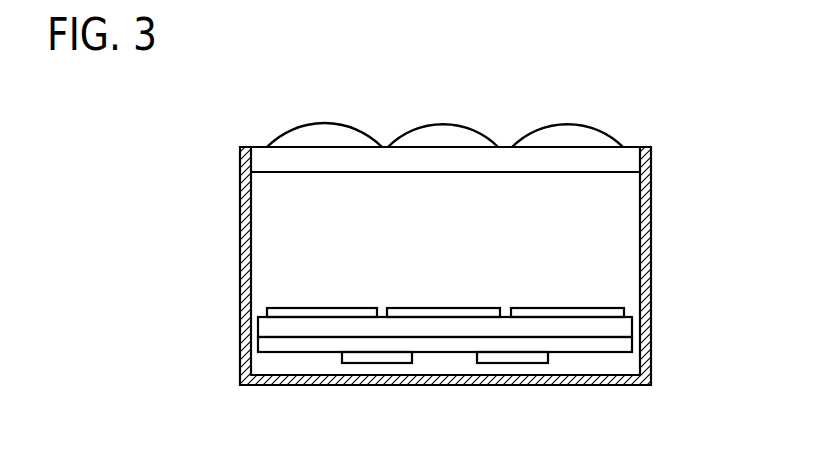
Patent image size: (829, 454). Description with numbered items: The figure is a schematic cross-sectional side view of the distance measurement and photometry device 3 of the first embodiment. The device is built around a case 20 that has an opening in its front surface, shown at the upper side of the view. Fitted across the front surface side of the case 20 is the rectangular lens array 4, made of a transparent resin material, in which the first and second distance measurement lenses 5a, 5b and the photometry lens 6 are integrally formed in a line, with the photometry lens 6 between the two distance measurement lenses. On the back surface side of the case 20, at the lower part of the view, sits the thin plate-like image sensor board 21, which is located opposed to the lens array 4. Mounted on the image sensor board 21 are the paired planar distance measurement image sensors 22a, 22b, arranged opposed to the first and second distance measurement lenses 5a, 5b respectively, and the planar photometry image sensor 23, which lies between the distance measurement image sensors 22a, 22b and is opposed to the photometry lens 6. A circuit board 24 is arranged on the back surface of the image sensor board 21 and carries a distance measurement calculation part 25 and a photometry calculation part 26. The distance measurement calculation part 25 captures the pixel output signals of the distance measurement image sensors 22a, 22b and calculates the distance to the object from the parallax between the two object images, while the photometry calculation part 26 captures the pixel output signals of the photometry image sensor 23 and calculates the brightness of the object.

The distance measurement and photometry device 3 is at (502, 84).
The lens array 4 is at (633, 146).
The first distance measurement lens 5a is at (322, 122).
The second distance measurement lens 5b is at (566, 122).
The photometry lens 6 is at (443, 122).
The case 20 is at (652, 212).
The image sensor board 21 is at (633, 325).
The distance measurement image sensor 22a is at (322, 307).
The distance measurement image sensor 22b is at (566, 307).
The photometry image sensor 23 is at (442, 307).
The circuit board 24 is at (633, 345).
The distance measurement calculation part 25 is at (375, 365).
The photometry calculation part 26 is at (512, 365).